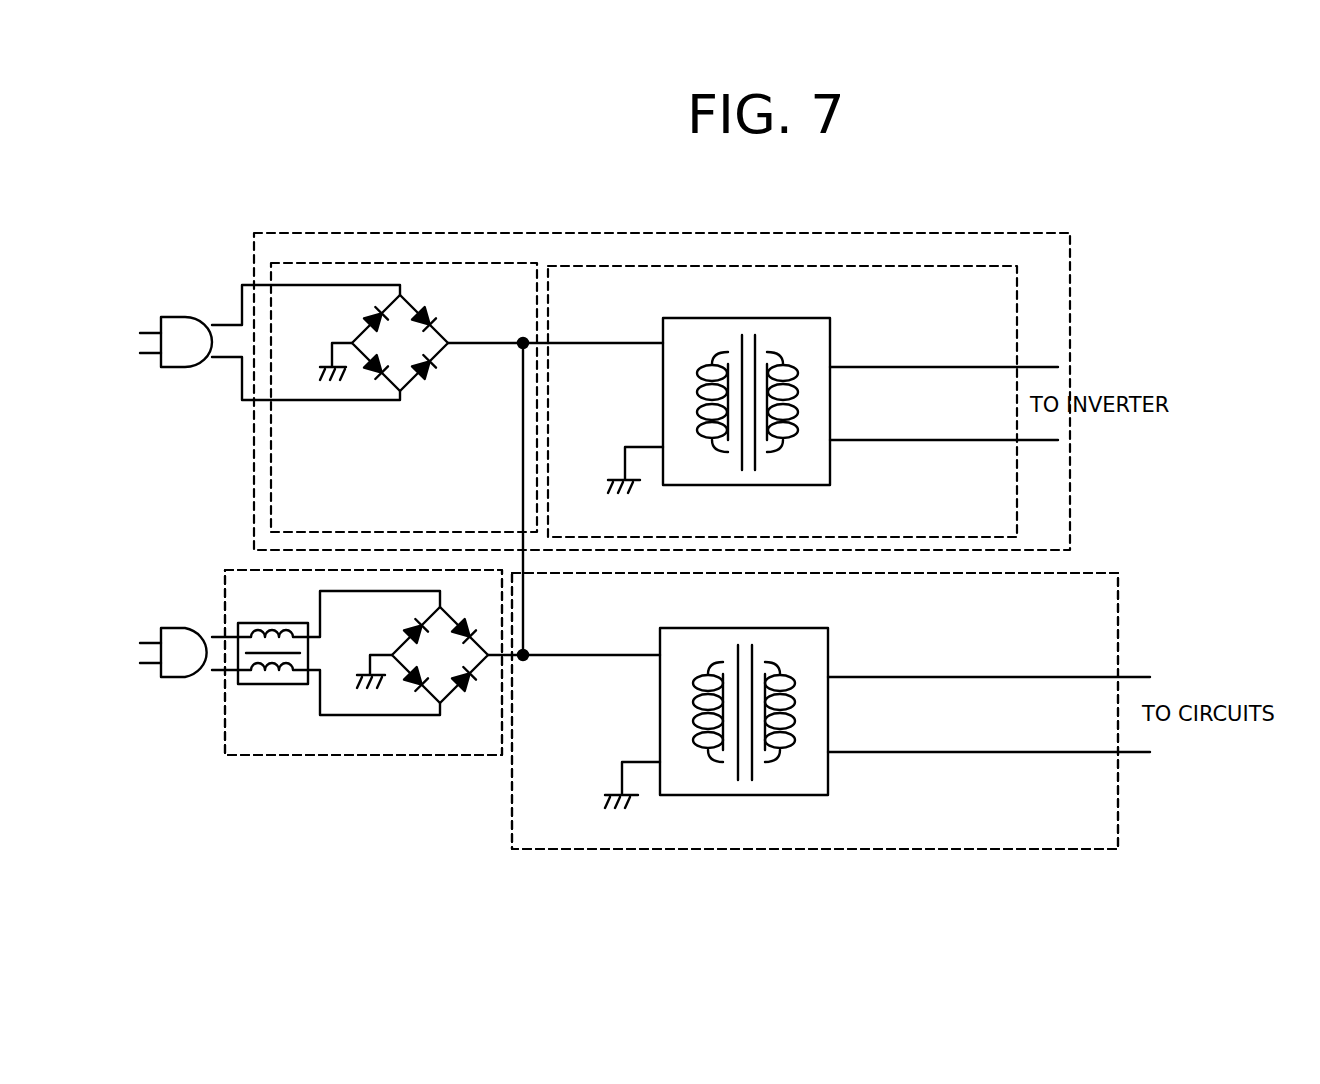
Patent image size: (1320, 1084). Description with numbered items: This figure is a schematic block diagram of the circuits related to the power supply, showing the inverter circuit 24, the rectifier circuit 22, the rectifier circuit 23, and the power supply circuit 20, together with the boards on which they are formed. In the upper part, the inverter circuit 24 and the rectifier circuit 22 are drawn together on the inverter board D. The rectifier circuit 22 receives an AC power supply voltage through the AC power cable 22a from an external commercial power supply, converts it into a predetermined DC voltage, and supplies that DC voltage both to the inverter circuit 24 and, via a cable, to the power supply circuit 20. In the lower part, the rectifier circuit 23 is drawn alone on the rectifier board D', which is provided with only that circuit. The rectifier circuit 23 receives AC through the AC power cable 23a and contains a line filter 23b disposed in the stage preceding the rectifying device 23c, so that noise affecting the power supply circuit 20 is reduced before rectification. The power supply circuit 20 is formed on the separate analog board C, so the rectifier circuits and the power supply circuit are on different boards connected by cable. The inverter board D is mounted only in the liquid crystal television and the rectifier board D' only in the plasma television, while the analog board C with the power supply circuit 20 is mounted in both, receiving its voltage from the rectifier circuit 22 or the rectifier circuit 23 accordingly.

The power supply circuit 20 is at (857, 850).
The rectifier circuit 22 is at (405, 262).
The AC power cable 22a is at (226, 323).
The rectifier circuit 23 is at (465, 757).
The AC power cable 23a is at (212, 680).
The line filter 23b is at (272, 686).
The rectifying device 23c is at (443, 712).
The inverter circuit 24 is at (797, 266).
The inverter board D is at (662, 372).
The rectifier board D' is at (363, 719).
The analog board C is at (663, 850).